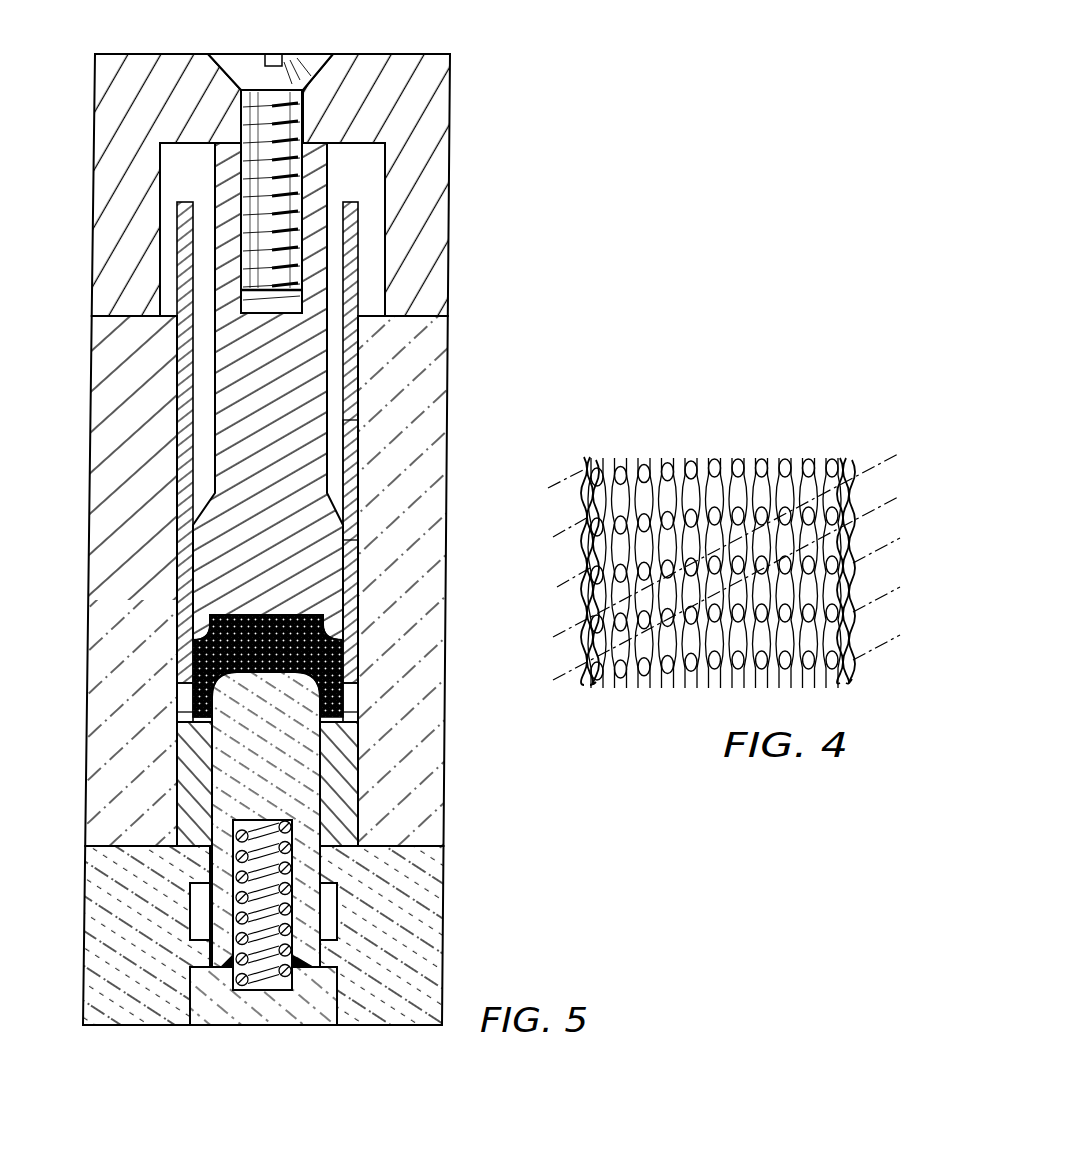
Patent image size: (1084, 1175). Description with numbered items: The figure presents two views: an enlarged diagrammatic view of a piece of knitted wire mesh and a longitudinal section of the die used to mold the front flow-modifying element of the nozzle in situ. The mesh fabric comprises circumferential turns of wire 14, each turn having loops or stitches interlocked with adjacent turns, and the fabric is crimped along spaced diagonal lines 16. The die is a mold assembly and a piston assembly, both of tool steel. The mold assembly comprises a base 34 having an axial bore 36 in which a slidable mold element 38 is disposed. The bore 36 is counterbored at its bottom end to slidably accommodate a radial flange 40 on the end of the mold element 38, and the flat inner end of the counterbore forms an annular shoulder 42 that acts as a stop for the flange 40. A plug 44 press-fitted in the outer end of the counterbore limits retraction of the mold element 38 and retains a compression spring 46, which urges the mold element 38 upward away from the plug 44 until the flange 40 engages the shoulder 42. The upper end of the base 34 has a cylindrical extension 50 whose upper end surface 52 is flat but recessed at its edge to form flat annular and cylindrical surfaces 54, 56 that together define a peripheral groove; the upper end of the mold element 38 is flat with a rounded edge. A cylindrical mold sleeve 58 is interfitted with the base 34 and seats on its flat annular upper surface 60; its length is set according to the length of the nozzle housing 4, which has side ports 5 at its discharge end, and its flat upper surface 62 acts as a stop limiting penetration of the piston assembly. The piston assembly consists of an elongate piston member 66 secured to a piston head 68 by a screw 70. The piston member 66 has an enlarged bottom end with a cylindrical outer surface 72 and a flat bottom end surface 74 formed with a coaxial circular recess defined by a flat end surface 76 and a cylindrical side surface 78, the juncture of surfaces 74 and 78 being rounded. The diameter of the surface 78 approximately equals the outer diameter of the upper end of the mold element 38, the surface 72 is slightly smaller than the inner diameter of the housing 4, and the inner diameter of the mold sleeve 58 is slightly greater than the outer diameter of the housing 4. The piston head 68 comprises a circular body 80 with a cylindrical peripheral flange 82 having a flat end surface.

In FIG. 5, the cylindrical housing 4 is at (357, 453).
In FIG. 5, the side ports 5 is at (347, 695).
In FIG. 4, the circumferential turns of wire 14 is at (664, 458).
In FIG. 4, the spaced diagonal lines 16 is at (578, 648).
In FIG. 5, the base 34 is at (445, 915).
In FIG. 5, the axial bore 36 is at (192, 995).
In FIG. 5, the mold element 38 is at (320, 779).
In FIG. 5, the radial flange 40 is at (337, 948).
In FIG. 5, the annular shoulder 42 is at (340, 900).
In FIG. 5, the plug 44 is at (303, 1012).
In FIG. 5, the compression spring 46 is at (265, 973).
In FIG. 5, the cylindrical extension 50 is at (345, 748).
In FIG. 5, the upper end surface 52 is at (200, 732).
In FIG. 5, the flat annular surface 54 is at (180, 735).
In FIG. 5, the cylindrical surface 56 is at (177, 718).
In FIG. 5, the mold sleeve 58 is at (88, 542).
In FIG. 5, the flat annular upper surface 60 is at (427, 846).
In FIG. 5, the flat upper surface 62 is at (420, 318).
In FIG. 5, the piston member 66 is at (327, 370).
In FIG. 5, the piston head 68 is at (290, 550).
In FIG. 5, the screw 70 is at (310, 63).
In FIG. 5, the cylindrical outer surface 72 is at (342, 530).
In FIG. 5, the flat bottom end surface 74 is at (337, 630).
In FIG. 5, the flat end surface 76 is at (268, 618).
In FIG. 5, the cylindrical side surface 78 is at (338, 608).
In FIG. 5, the circular body 80 is at (358, 92).
In FIG. 5, the cylindrical peripheral flange 82 is at (433, 228).